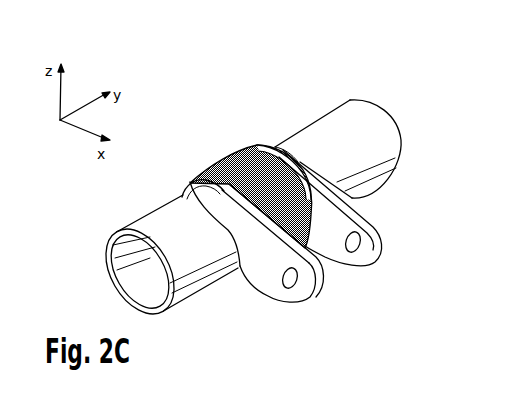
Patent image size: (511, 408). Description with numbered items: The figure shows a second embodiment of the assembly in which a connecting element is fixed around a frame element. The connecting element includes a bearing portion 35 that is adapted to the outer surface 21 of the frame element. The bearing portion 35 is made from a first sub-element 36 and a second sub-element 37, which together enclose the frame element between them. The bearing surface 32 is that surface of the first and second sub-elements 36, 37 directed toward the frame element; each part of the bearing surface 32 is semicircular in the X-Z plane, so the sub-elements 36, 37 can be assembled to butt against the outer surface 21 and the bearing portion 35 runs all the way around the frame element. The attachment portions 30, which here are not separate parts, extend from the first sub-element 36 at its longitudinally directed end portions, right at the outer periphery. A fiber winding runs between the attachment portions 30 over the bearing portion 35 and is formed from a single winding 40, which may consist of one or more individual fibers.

The outer surface 21 is at (367, 132).
The attachment portions 30 is at (372, 216).
The bearing surface 32 is at (188, 200).
The bearing portion 35 is at (303, 160).
The first sub-element 36 is at (286, 154).
The second sub-element 37 is at (267, 148).
The winding 40 is at (223, 157).